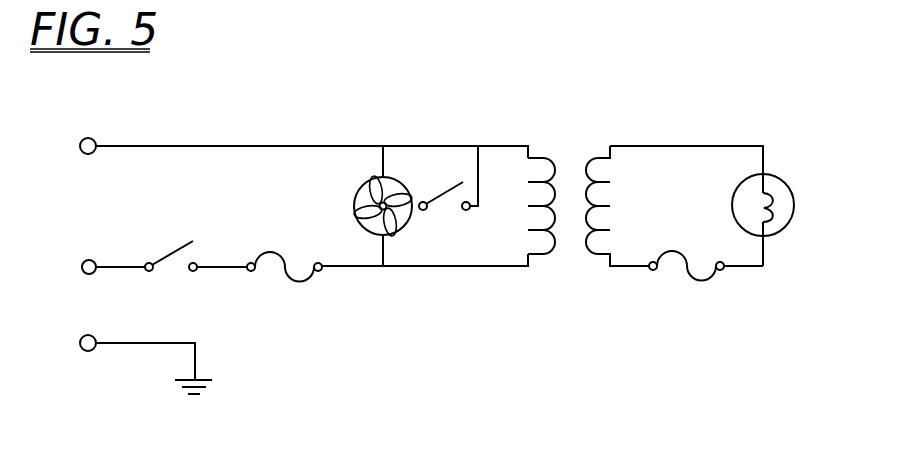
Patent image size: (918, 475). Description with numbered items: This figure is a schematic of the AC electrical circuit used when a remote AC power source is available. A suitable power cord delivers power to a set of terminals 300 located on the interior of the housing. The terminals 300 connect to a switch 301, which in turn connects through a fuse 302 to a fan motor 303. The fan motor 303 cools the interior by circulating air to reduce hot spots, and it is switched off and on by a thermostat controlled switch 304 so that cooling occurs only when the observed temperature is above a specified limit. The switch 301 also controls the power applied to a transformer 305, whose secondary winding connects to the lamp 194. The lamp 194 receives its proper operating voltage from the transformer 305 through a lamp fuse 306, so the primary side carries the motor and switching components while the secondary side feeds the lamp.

The terminals 300 is at (82, 267).
The switch 301 is at (168, 254).
The fuse 302 is at (270, 252).
The fan motor 303 is at (354, 217).
The thermostat controlled switch 304 is at (439, 195).
The transformer 305 is at (550, 176).
The lamp fuse 306 is at (694, 266).
The lamp 194 is at (785, 207).